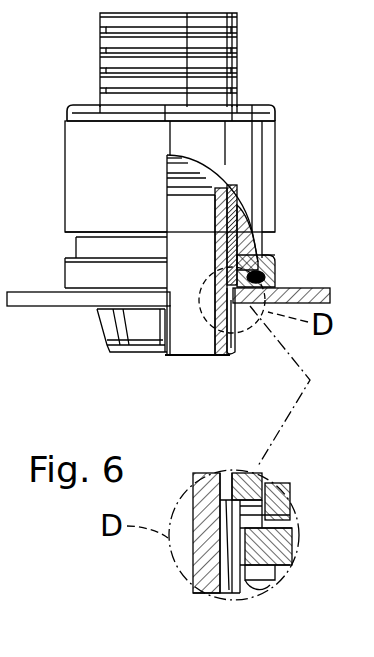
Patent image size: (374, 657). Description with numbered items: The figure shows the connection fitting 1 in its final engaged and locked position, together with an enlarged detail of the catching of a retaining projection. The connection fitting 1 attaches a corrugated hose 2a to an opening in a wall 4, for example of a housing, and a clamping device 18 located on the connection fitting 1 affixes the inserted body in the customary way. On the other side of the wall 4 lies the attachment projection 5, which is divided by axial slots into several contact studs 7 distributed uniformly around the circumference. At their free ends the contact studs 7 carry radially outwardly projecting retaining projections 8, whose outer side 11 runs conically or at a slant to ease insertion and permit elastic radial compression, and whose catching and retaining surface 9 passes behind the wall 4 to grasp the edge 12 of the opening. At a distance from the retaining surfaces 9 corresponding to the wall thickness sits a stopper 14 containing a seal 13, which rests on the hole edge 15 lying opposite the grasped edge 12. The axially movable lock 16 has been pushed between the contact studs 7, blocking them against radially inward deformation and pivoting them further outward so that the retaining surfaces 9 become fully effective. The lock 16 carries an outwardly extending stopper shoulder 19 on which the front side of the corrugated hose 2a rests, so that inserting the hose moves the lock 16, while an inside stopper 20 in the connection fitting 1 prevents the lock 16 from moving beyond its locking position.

In FIG. 6, the connection fitting 1 is at (70, 68).
In FIG. 6, the corrugated hose 2a is at (228, 42).
In FIG. 6, the clamping device 18 is at (248, 108).
In FIG. 6, the stopper shoulder 19 is at (262, 228).
In FIG. 6, the stopper 20 is at (204, 251).
In FIG. 6, the seal 13 is at (270, 269).
In FIG. 6, the stopper 14 is at (268, 282).
In FIG. 6D, the stopper 14 is at (263, 518).
In FIG. 6, the movable lock 16 is at (211, 340).
In FIG. 6D, the movable lock 16 is at (205, 572).
In FIG. 6, the contact studs 7 is at (163, 352).
In FIG. 6, the wall 4 is at (31, 292).
In FIG. 6, the attachment projection 5 is at (137, 368).
In FIG. 6D, the hole edge 15 is at (290, 518).
In FIG. 6D, the edge of the opening 12 is at (280, 556).
In FIG. 6D, the retaining projections 8 is at (275, 570).
In FIG. 6D, the outer side 11 is at (262, 572).
In FIG. 6D, the catching and retaining surface 9 is at (238, 588).